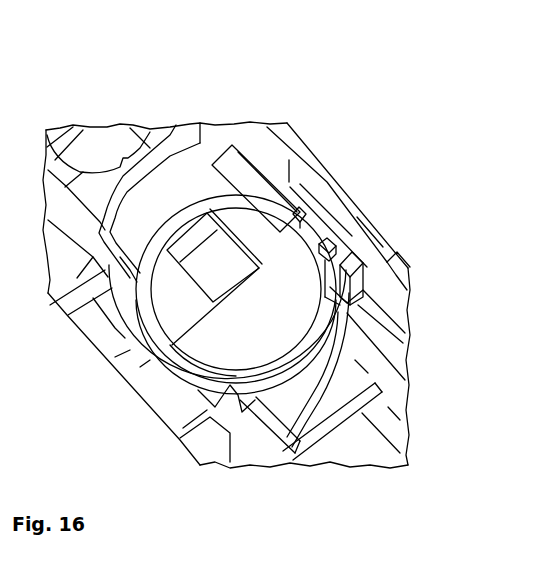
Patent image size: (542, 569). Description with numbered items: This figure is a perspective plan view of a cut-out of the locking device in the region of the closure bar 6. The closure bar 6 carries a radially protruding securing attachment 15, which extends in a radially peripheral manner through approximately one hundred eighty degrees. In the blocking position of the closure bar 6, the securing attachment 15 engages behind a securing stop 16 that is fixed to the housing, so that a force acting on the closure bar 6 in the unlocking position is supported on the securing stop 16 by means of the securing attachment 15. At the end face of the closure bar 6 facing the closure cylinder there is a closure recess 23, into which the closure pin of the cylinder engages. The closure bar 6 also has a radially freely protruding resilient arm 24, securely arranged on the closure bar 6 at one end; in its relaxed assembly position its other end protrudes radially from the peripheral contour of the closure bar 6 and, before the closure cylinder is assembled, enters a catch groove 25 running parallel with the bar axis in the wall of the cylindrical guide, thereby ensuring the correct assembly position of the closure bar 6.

The closure bar 6 is at (220, 352).
The securing attachment 15 is at (182, 224).
The securing stop 16 is at (222, 350).
The closure recess 23 is at (222, 282).
The resilient arm 24 is at (318, 232).
The catch groove 25 is at (368, 179).